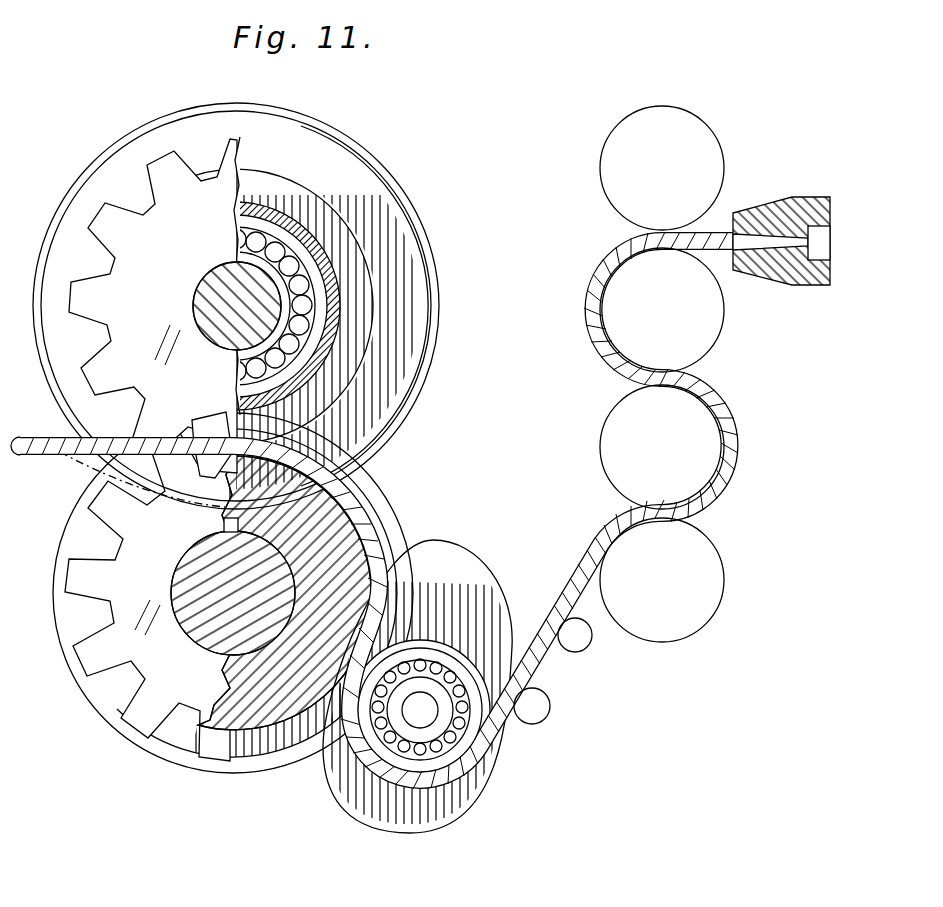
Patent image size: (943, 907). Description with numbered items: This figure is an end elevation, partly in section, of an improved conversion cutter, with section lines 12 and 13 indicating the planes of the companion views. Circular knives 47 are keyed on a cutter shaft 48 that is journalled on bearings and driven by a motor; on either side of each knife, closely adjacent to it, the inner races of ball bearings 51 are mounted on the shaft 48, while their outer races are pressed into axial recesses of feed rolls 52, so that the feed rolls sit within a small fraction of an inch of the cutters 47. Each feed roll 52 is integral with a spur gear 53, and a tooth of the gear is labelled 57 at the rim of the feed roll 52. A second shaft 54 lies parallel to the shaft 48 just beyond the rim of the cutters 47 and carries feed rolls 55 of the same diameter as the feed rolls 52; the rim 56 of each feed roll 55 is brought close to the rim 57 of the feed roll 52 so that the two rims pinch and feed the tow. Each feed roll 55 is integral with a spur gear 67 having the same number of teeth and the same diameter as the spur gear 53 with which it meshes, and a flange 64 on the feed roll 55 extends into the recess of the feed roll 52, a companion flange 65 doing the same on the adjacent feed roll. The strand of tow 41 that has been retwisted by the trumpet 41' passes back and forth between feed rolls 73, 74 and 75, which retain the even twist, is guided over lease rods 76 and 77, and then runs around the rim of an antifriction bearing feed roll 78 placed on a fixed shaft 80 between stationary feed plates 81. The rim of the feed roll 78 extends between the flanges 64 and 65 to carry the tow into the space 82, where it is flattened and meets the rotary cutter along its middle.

The section line 12- 12 is at (468, 95).
The section line 13- 13 is at (216, 78).
The strand 41 is at (374, 501).
The trumpet 41' is at (781, 217).
The circular knife 47 is at (418, 216).
The cutter shaft 48 is at (217, 281).
The ball bearing 51 is at (274, 237).
The feed roll 52 is at (273, 169).
The spur gear 53 is at (160, 182).
The second shaft 54 is at (202, 555).
The feed roll 55 is at (270, 717).
The rim 56 is at (93, 556).
The rim 57 is at (200, 167).
The flange 64 is at (142, 732).
The flange 65 is at (366, 487).
The spur gear 67 is at (92, 647).
The feed roll 73 is at (662, 310).
The feed roll 74 is at (662, 447).
The feed roll 75 is at (662, 580).
The lease rod 76 is at (587, 643).
The lease rod 77 is at (550, 710).
The antifriction bearing feed roll 78 is at (433, 648).
The fixed shaft 80 is at (420, 710).
The stationary feed plate 81 is at (435, 548).
The space 82 is at (220, 416).